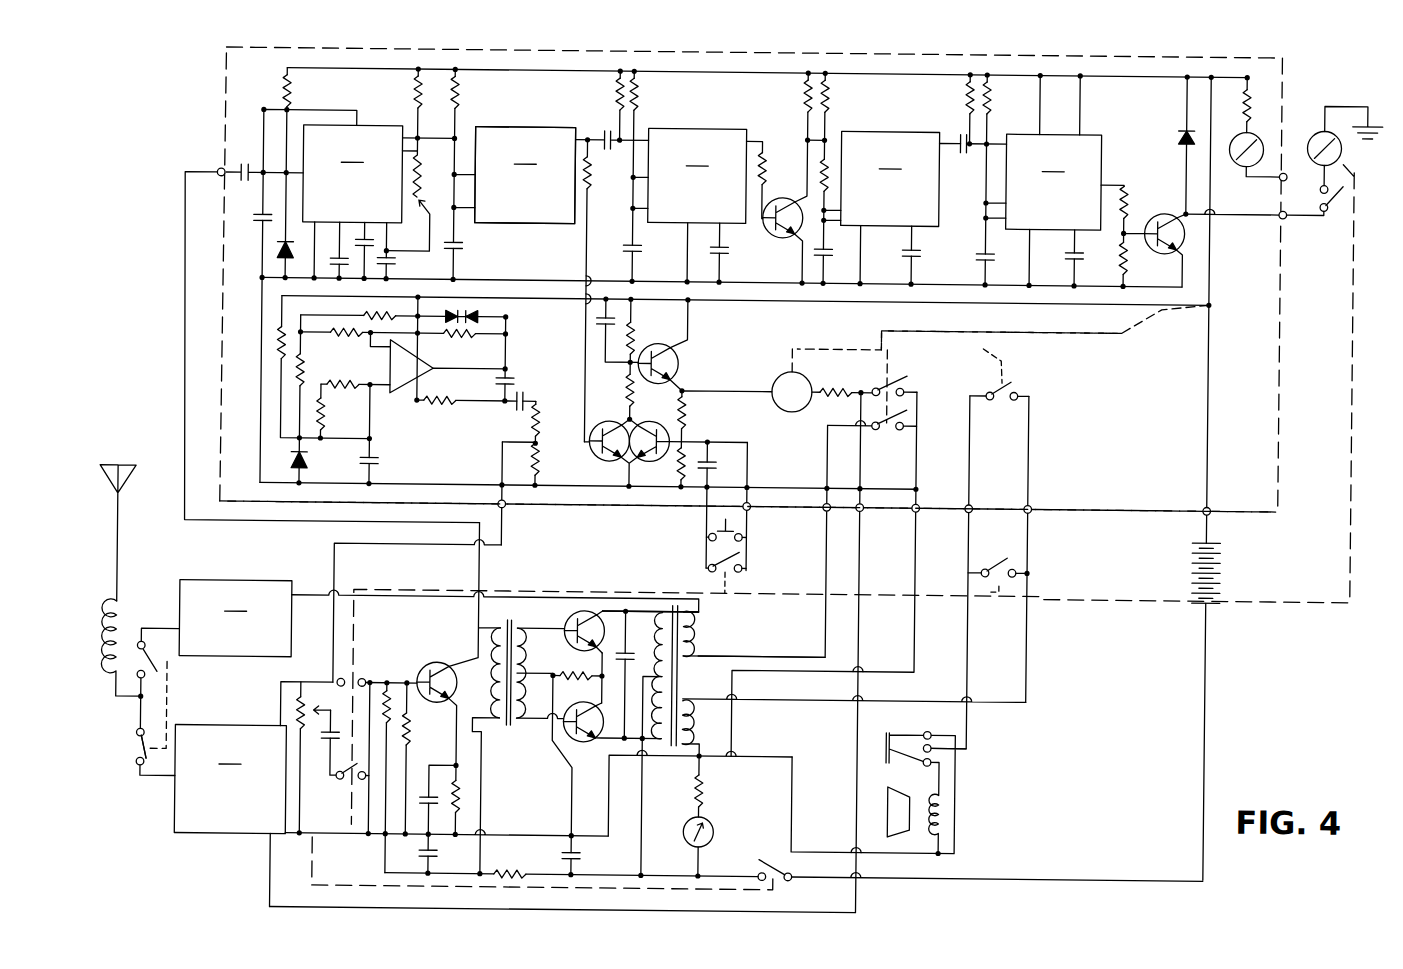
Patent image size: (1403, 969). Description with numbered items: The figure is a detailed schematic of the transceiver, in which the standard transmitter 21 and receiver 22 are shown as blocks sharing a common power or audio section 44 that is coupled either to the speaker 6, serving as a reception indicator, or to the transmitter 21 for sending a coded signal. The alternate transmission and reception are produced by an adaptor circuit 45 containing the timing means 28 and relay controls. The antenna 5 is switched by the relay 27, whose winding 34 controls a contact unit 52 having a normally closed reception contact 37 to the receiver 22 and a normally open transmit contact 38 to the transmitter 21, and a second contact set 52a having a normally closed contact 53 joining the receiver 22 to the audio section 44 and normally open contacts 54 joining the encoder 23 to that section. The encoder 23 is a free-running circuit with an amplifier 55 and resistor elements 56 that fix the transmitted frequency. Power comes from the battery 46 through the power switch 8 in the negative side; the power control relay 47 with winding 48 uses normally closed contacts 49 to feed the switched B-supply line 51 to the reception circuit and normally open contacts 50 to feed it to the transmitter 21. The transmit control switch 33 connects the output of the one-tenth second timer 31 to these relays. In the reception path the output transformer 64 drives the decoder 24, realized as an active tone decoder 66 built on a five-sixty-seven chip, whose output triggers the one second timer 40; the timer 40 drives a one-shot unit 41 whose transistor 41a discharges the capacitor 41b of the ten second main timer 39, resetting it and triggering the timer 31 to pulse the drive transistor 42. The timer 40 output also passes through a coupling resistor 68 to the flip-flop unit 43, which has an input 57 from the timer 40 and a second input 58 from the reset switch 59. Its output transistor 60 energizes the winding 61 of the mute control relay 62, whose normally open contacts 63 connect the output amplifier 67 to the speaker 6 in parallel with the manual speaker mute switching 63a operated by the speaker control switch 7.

The antenna 5 is at (150, 452).
The speaker 6 is at (885, 792).
The speaker control switch 7 is at (960, 591).
The power switch 8 is at (774, 856).
The transmitter 21 is at (235, 618).
The receiver 22 is at (230, 779).
The encoder 23 is at (742, 422).
The decoder 24 is at (383, 101).
The switching relay 27 is at (173, 724).
The timing means 28 is at (549, 128).
The short period timer 31 is at (1053, 181).
The transmit control switch 33 is at (1333, 201).
The relay winding 34 is at (128, 628).
The reception contact 37 is at (138, 751).
The transmit contact 38 is at (161, 681).
The main timer 39 is at (890, 209).
The one second timer 40 is at (525, 175).
The one-shot unit 41 is at (697, 206).
The transistor 41a is at (781, 239).
The capacitor 41b is at (832, 250).
The drive transistor 42 is at (1161, 206).
The flip-flop unit 43 is at (648, 488).
The audio section 44 is at (585, 718).
The adaptor circuit 45 is at (587, 508).
The battery 46 is at (1186, 566).
The power control relay 47 is at (1170, 315).
The winding 48 is at (1252, 134).
The normally closed contacts 49 is at (904, 383).
The normally open contacts 50 is at (1309, 122).
The switched B-supply line 51 is at (918, 475).
The contact unit 52 is at (139, 768).
The second contact set 52a is at (347, 703).
The normally closed contact 53 is at (360, 784).
The normally open contacts 54 is at (352, 680).
The amplifier 55 is at (389, 368).
The resistor elements 56 is at (486, 409).
The input 57 is at (602, 423).
The second input 58 is at (657, 423).
The reset switch 59 is at (745, 544).
The output transistor 60 is at (678, 358).
The winding 61 is at (783, 409).
The mute control relay 62 is at (868, 340).
The normally open contacts 63 is at (1025, 390).
The speaker mute switching 63a is at (1033, 573).
The output transformer 64 is at (518, 613).
The tone decoder 66 is at (352, 203).
The output amplifier 67 is at (615, 760).
The coupling resistor 68 is at (588, 190).